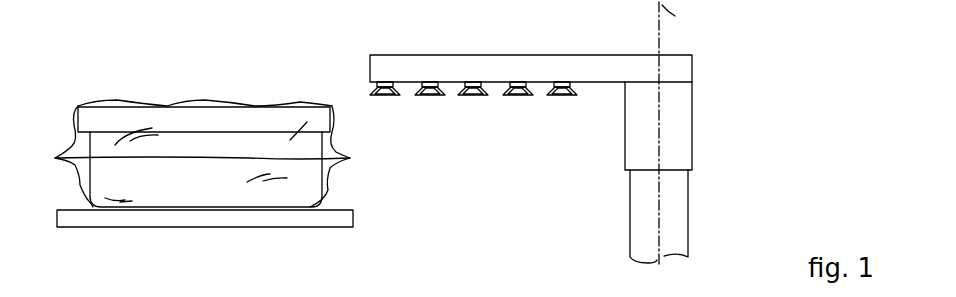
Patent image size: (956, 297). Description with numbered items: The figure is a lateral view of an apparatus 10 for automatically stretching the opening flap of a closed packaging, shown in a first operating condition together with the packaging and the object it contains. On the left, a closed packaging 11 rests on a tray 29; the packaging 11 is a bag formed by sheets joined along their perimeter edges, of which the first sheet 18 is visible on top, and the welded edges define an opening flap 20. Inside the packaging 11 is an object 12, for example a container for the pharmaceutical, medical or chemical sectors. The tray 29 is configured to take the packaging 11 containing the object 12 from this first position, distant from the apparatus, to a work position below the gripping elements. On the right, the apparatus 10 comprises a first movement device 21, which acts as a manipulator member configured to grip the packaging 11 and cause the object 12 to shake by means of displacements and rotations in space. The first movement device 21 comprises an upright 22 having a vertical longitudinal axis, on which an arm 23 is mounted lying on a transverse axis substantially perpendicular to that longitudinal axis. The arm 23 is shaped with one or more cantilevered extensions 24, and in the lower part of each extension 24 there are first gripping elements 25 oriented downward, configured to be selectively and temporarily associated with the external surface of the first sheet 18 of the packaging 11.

The apparatus 10 is at (569, 132).
The closed packaging 11 is at (83, 148).
The object 12 is at (160, 117).
The first sheet 18 is at (105, 100).
The opening flap 20 is at (350, 158).
The first movement device 21 is at (514, 74).
The upright 22 is at (680, 157).
The arm 23 is at (682, 68).
The extension 24 is at (393, 67).
The first gripping elements 25 is at (430, 97).
The tray 29 is at (95, 218).